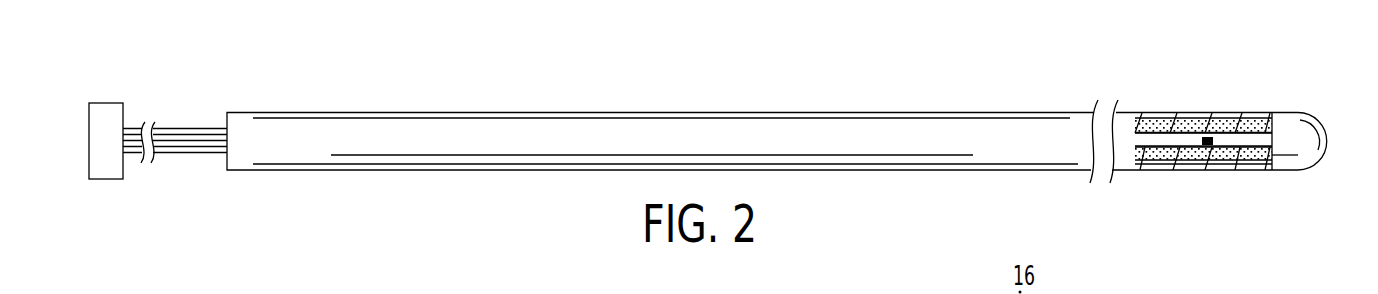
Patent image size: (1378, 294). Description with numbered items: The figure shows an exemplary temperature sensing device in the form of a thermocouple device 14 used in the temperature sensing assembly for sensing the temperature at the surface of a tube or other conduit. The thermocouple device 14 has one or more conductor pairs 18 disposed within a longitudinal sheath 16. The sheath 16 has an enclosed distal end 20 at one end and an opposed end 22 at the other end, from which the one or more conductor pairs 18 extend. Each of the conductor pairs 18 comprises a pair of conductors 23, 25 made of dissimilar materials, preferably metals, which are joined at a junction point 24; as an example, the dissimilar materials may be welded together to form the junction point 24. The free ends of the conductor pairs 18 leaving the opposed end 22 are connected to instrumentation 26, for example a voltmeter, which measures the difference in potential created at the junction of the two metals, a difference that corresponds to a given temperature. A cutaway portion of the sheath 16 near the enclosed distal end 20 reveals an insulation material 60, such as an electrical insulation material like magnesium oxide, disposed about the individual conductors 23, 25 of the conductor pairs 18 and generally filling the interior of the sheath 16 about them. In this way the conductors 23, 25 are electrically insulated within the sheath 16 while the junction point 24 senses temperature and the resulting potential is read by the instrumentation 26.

The thermocouple device 14 is at (735, 73).
The longitudinal sheath 16 is at (868, 130).
The conductor pairs 18 is at (202, 171).
The enclosed distal end 20 is at (1300, 112).
The opposed end 22 is at (398, 112).
The conductor 23 is at (1180, 140).
The junction point 24 is at (1210, 136).
The conductor 25 is at (1252, 148).
The instrumentation 26 is at (108, 112).
The insulation material 60 is at (1168, 160).